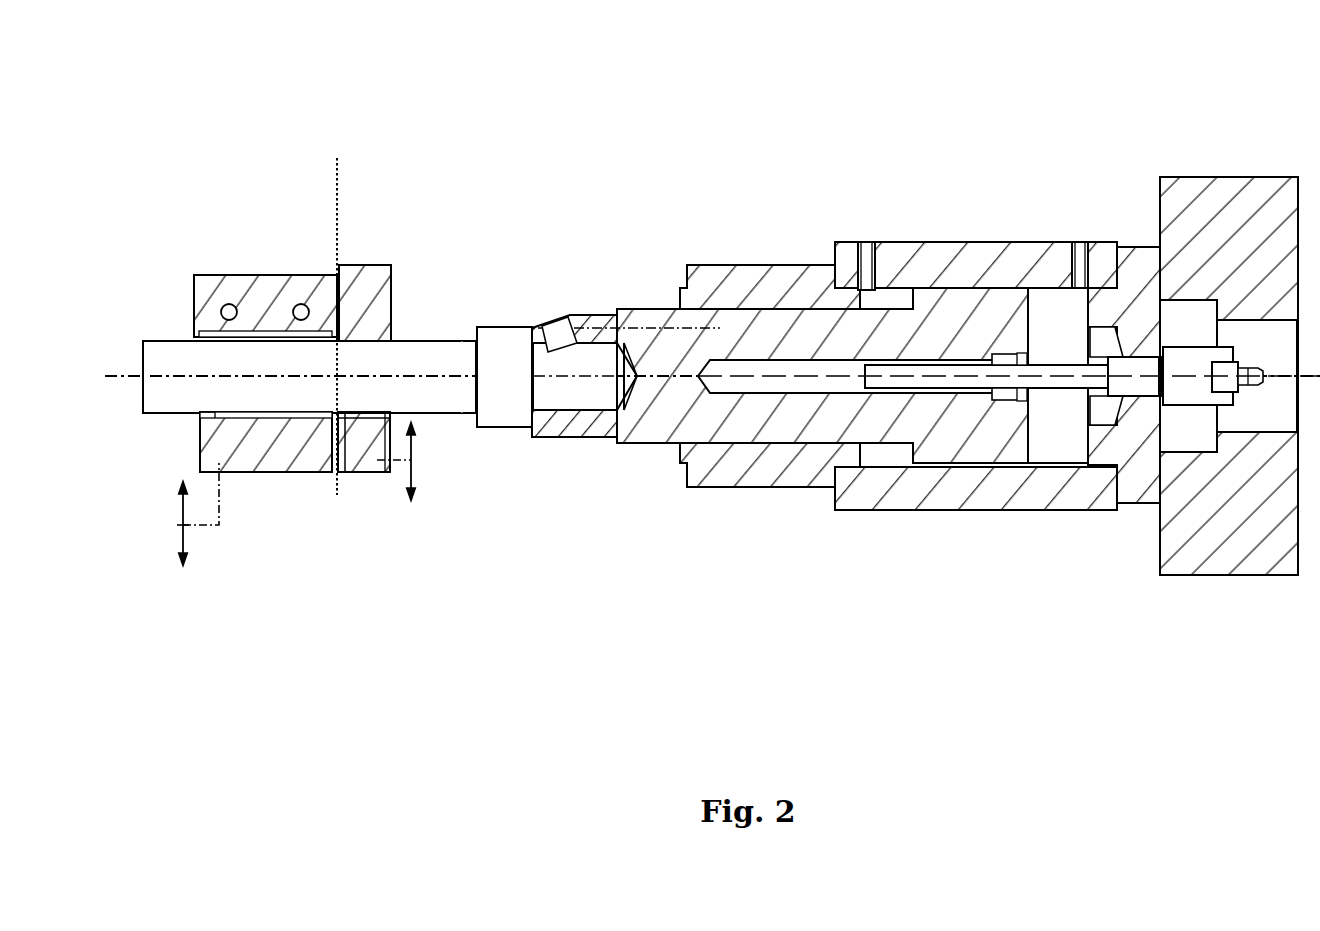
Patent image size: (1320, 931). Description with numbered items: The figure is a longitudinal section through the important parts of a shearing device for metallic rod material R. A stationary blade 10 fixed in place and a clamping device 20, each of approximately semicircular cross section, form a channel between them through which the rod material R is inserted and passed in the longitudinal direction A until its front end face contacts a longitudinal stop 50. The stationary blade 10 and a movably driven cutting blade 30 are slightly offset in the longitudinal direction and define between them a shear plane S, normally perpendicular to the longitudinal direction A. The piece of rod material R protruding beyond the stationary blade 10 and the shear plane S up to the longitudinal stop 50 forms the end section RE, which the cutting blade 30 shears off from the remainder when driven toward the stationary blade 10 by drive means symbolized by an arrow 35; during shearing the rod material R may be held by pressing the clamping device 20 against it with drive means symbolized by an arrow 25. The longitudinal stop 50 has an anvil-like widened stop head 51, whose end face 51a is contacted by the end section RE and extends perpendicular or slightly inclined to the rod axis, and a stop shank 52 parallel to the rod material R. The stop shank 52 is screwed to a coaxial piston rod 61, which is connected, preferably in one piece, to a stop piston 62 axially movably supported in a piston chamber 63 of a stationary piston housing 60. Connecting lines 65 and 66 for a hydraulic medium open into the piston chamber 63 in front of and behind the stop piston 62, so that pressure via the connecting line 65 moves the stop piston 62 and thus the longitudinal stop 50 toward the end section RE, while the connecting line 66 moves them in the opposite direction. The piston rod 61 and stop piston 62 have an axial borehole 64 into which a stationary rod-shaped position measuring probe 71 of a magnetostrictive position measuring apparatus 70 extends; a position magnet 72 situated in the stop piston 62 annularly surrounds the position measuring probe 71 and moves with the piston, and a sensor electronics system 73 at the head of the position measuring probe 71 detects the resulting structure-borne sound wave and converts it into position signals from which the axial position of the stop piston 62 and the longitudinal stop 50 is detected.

The stationary blade 10 is at (239, 261).
The clamping device 20 is at (268, 488).
The movable cutting blade 30 is at (359, 488).
The arrow symbolizing clamping drive means 25 is at (180, 509).
The arrow symbolizing cutting blade drive means 35 is at (412, 478).
The rod material R is at (177, 393).
The shear plane S is at (338, 165).
The longitudinal direction A is at (403, 367).
The end section RE is at (462, 350).
The longitudinal stop 50 is at (527, 445).
The stop head 51 is at (500, 333).
The end face of stop head 51a is at (476, 422).
The stop shank 52 is at (572, 390).
The piston housing 60 is at (857, 524).
The piston rod 61 is at (753, 330).
The stop piston 62 is at (968, 297).
The piston chamber 63 is at (1052, 445).
The axial borehole 64 is at (722, 447).
The connecting line 65 is at (1080, 248).
The connecting line 66 is at (867, 248).
The position measuring apparatus 70 is at (1192, 330).
The position measuring probe 71 is at (945, 380).
The position magnet 72 is at (1002, 397).
The sensor electronics system 73 is at (1183, 393).